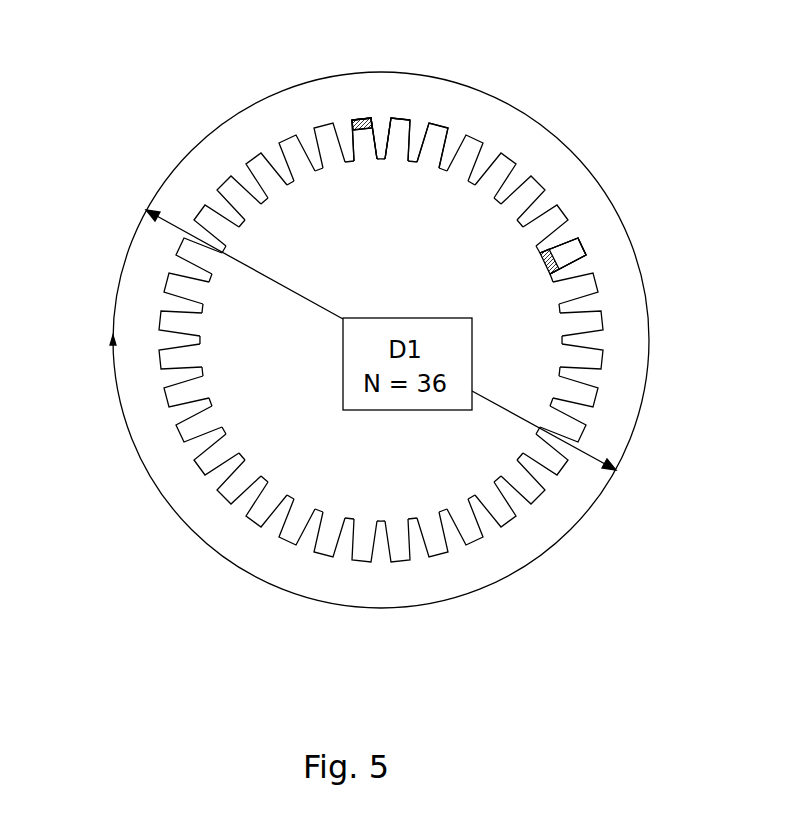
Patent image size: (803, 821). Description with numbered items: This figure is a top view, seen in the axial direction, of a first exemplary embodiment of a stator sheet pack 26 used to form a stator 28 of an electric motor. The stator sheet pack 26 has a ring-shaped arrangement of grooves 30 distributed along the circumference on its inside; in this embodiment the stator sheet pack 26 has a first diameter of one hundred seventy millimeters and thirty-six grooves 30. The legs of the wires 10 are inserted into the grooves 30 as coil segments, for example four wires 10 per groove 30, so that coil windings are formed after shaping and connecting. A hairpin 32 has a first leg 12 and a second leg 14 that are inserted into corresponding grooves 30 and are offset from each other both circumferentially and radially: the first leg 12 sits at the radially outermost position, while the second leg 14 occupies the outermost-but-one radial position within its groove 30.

The wire 10 is at (375, 117).
The first leg 12 is at (575, 247).
The second leg 14 is at (362, 118).
The stator sheet pack 26 is at (230, 132).
The stator 28 is at (138, 90).
The groove 30 is at (370, 150).
The hairpin 32 is at (365, 118).